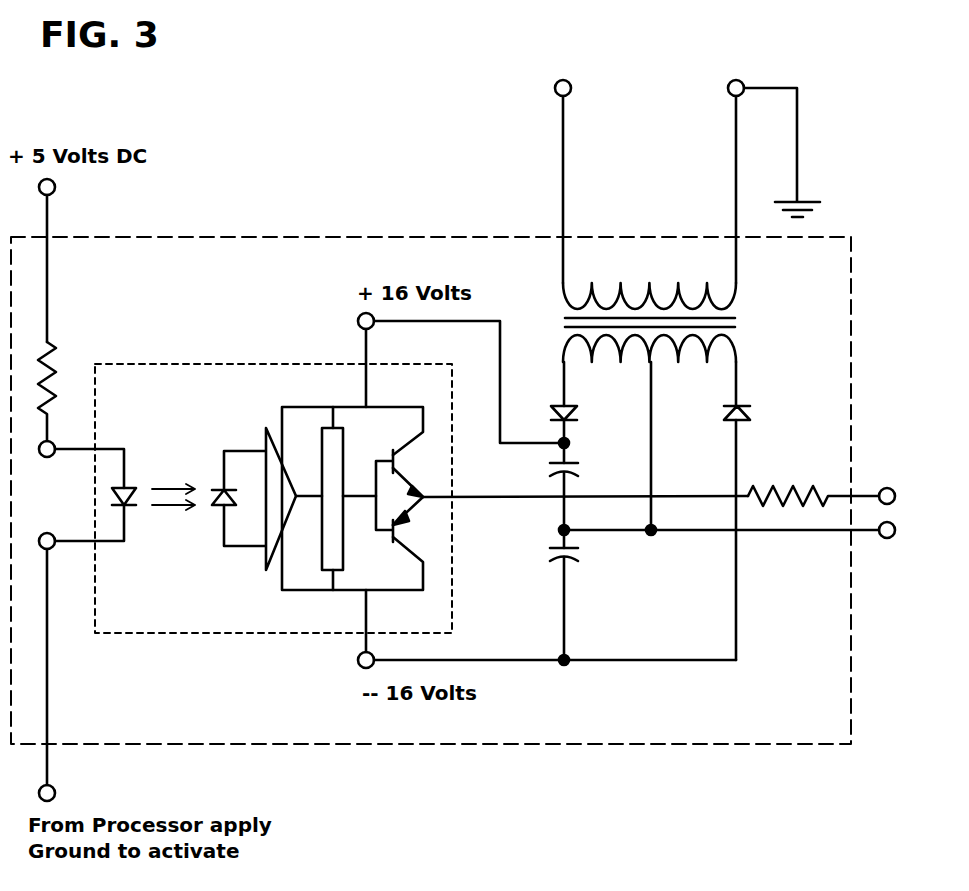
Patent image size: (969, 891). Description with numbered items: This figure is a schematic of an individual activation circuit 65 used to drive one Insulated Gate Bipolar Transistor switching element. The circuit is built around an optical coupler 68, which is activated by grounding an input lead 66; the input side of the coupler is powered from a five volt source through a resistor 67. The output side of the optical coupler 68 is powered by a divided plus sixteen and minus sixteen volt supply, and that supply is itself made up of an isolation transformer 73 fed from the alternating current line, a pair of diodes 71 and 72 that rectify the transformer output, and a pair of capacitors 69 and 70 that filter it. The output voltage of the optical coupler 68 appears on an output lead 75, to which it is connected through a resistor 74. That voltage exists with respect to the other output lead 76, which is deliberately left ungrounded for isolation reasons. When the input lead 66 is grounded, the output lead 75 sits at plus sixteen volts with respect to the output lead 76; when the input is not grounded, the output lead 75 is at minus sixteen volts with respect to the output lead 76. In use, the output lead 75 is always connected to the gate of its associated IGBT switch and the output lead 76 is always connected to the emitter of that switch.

The activation circuit 65 is at (440, 745).
The input lead 66 is at (55, 790).
The resistor 67 is at (53, 352).
The optical coupler 68 is at (207, 634).
The capacitor 69 is at (578, 553).
The capacitor 70 is at (578, 466).
The diode 71 is at (575, 412).
The diode 72 is at (742, 408).
The isolation transformer 73 is at (735, 318).
The resistor 74 is at (808, 488).
The output lead 75 is at (884, 487).
The output lead 76 is at (885, 540).